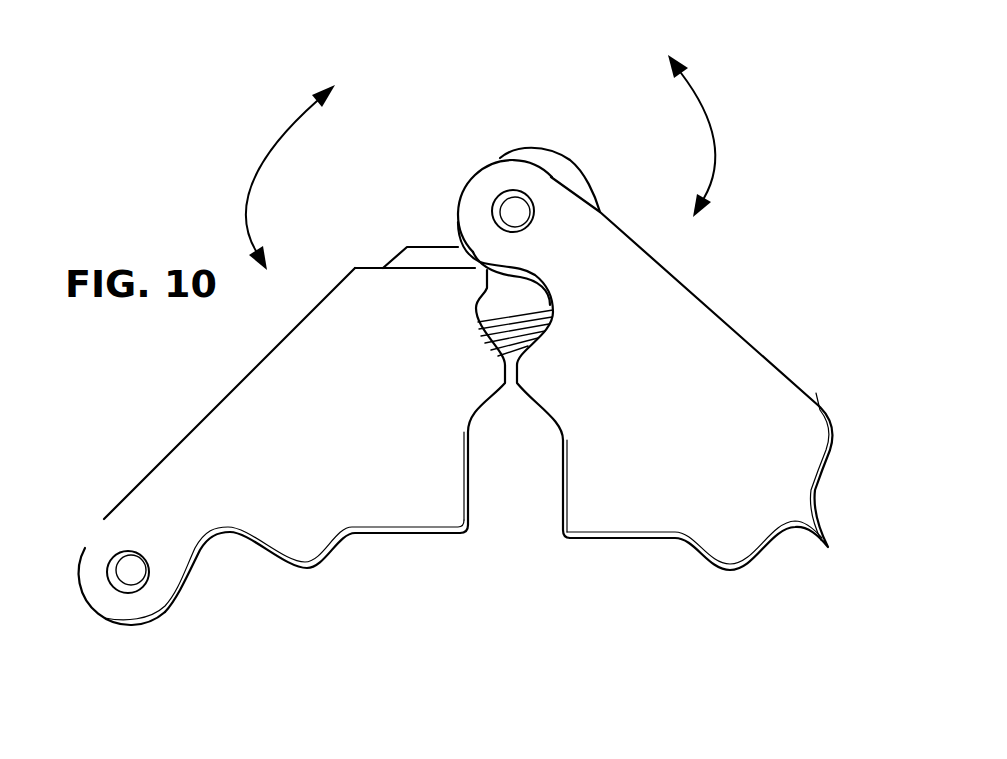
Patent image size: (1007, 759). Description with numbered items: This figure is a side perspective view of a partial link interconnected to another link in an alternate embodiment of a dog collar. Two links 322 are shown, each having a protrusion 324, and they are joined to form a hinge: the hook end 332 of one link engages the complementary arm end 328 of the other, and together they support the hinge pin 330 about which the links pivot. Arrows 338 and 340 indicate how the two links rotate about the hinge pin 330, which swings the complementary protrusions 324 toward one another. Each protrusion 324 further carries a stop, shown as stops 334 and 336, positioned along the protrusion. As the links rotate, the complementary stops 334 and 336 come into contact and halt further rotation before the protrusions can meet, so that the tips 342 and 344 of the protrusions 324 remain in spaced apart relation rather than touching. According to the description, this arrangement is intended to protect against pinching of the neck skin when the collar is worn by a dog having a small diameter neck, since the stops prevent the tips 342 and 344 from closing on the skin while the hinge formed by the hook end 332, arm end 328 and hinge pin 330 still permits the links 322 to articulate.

The link 322 is at (207, 407).
The protrusion 324 is at (420, 512).
The complementary arm end 328 is at (478, 195).
The hinge pin 330 is at (513, 211).
The hook end 332 is at (563, 166).
The stop 334 is at (293, 557).
The stop 336 is at (488, 392).
The arrow 338 is at (258, 180).
The arrow 340 is at (710, 138).
The tip 342 is at (463, 528).
The tip 344 is at (563, 542).